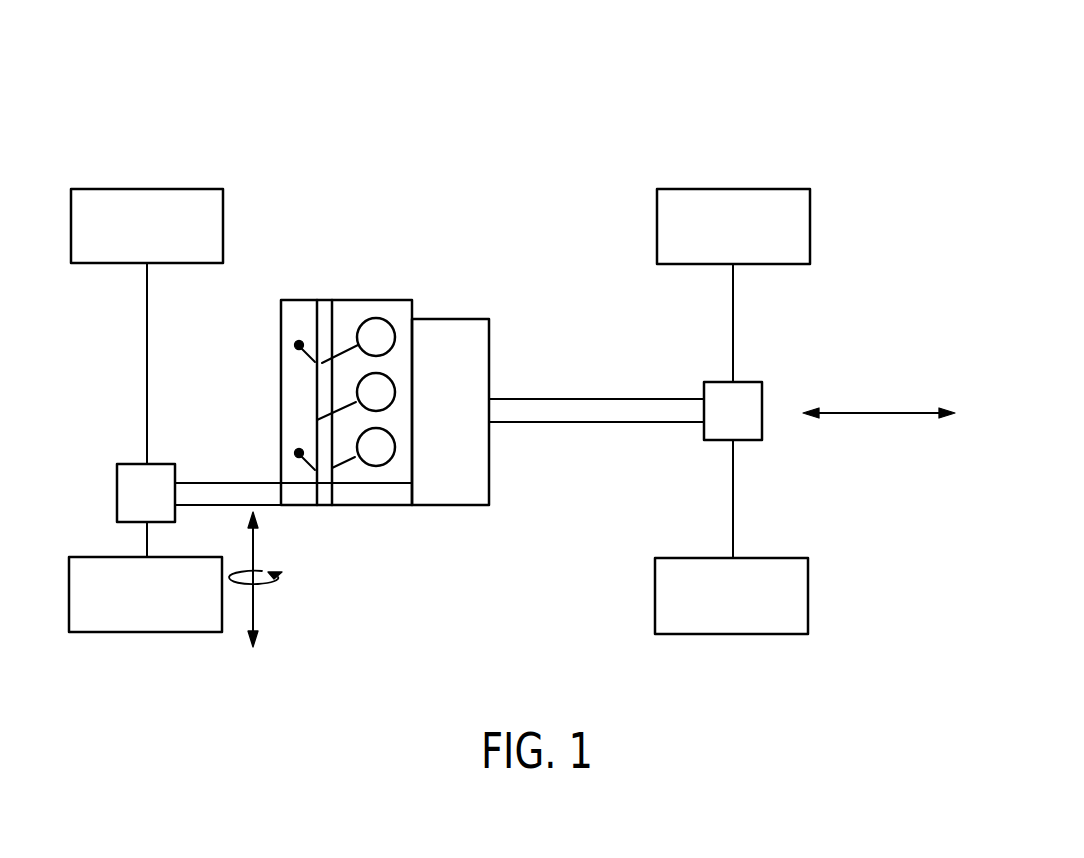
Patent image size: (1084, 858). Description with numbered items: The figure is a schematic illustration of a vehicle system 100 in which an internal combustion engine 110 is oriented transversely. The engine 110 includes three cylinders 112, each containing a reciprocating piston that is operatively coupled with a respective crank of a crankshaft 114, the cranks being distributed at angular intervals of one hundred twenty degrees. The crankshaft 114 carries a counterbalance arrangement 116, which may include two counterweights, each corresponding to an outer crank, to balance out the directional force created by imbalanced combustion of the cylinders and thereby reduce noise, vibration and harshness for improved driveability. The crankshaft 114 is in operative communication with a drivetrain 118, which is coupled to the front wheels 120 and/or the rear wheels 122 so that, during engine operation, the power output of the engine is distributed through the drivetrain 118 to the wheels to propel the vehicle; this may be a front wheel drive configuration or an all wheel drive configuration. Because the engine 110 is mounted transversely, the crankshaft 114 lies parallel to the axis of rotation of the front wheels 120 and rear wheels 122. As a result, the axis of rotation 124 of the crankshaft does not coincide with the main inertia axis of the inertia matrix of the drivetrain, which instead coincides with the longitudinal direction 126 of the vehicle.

The vehicle system 100 is at (626, 84).
The internal combustion engine 110 is at (347, 300).
The cylinders 112 is at (393, 313).
The crankshaft 114 is at (324, 307).
The counterbalance arrangement 116 is at (286, 345).
The drivetrain 118 is at (537, 384).
The front wheels 120 is at (146, 189).
The rear wheels 122 is at (731, 189).
The axis of rotation 124 is at (253, 603).
The longitudinal direction 126 is at (882, 413).